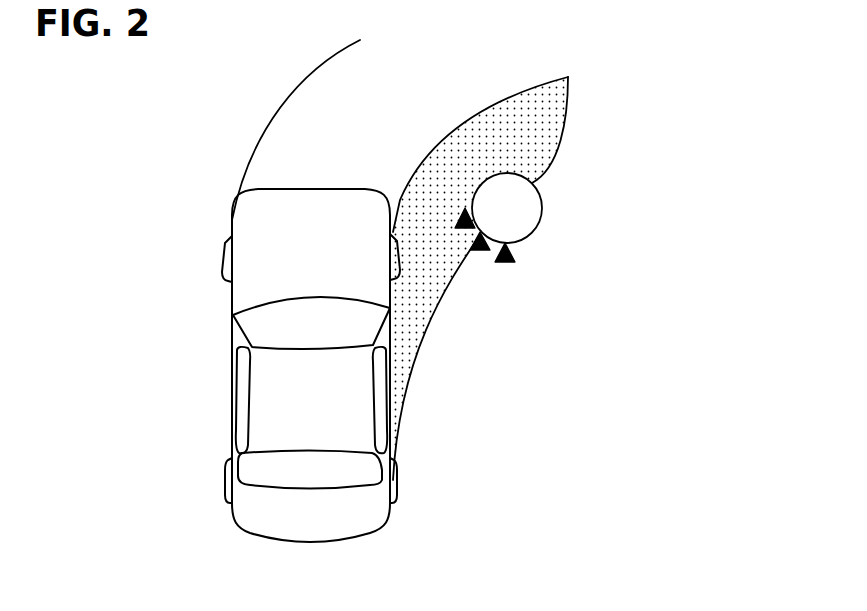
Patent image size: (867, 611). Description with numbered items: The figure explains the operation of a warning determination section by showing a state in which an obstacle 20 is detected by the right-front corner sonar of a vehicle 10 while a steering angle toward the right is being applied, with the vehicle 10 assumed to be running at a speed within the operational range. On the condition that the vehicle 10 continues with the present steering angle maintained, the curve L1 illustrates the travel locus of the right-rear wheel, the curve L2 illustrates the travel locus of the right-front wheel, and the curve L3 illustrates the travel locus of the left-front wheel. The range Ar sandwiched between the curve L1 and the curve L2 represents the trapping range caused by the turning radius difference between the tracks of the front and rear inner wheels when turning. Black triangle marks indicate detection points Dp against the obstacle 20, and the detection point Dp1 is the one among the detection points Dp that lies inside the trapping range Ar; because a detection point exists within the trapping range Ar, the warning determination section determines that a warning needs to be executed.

The vehicle 10 is at (232, 314).
The obstacle 20 is at (542, 214).
The trapping range Ar is at (526, 124).
The curve (travel locus of right-rear wheel) L1 is at (413, 362).
The curve (travel locus of right-front wheel) L2 is at (457, 120).
The curve (travel locus of left-front wheel) L3 is at (255, 127).
The detection point Dp is at (505, 262).
The detection point (in trapping range) Dp1 is at (457, 222).